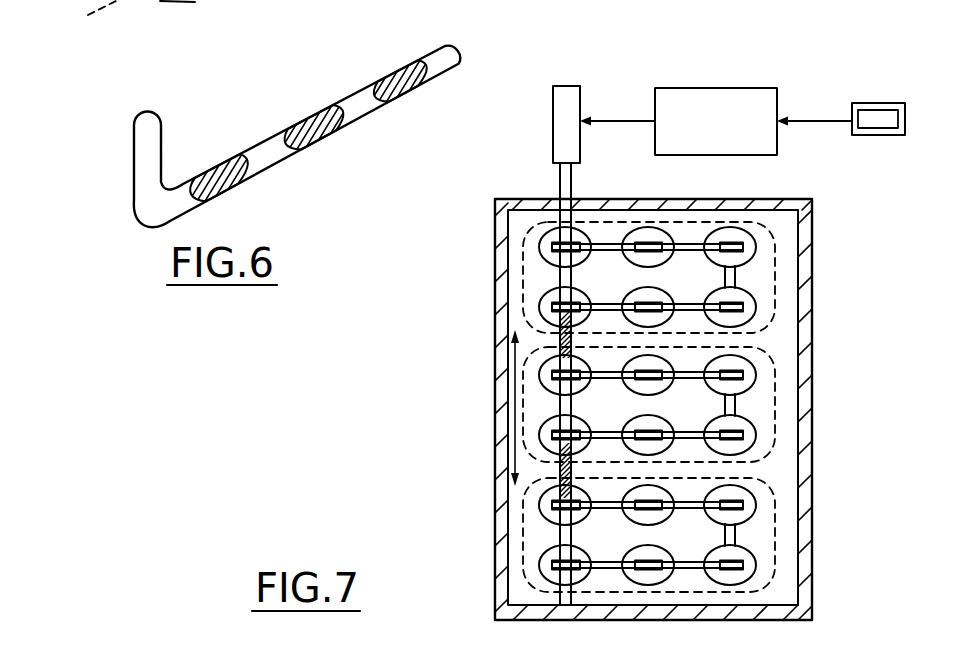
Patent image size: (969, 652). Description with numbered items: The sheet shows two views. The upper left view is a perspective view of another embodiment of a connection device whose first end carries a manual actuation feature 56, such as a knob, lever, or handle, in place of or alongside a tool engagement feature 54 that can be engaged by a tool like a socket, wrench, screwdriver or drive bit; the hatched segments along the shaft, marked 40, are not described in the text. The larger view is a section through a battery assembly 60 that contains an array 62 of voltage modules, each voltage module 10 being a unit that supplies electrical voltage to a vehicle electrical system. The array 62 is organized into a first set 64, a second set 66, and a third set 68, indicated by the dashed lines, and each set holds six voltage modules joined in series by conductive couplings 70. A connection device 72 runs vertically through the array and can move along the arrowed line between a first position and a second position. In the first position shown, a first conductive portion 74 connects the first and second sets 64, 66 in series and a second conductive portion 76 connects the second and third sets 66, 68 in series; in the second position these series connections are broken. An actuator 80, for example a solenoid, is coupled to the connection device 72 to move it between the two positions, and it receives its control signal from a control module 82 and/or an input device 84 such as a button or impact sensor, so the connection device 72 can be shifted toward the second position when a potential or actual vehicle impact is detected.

In FIG. 7, the voltage module 10 is at (757, 303).
In FIG. 6, the transducer segment 40 is at (210, 166).
In FIG. 6, the tool engagement feature 54 is at (178, 2).
In FIG. 6, the manual actuation feature 56 is at (134, 155).
In FIG. 7, the battery assembly 60 is at (520, 127).
In FIG. 7, the array 62 is at (478, 197).
In FIG. 7, the first set 64 is at (525, 248).
In FIG. 7, the second set 66 is at (527, 349).
In FIG. 7, the third set 68 is at (527, 483).
In FIG. 7, the conductive couplings 70 is at (606, 251).
In FIG. 7, the connection device 72 is at (546, 171).
In FIG. 7, the first conductive portion 74 is at (557, 338).
In FIG. 7, the second conductive portion 76 is at (557, 468).
In FIG. 7, the actuator 80 is at (563, 86).
In FIG. 7, the control module 82 is at (715, 88).
In FIG. 7, the input device 84 is at (874, 103).